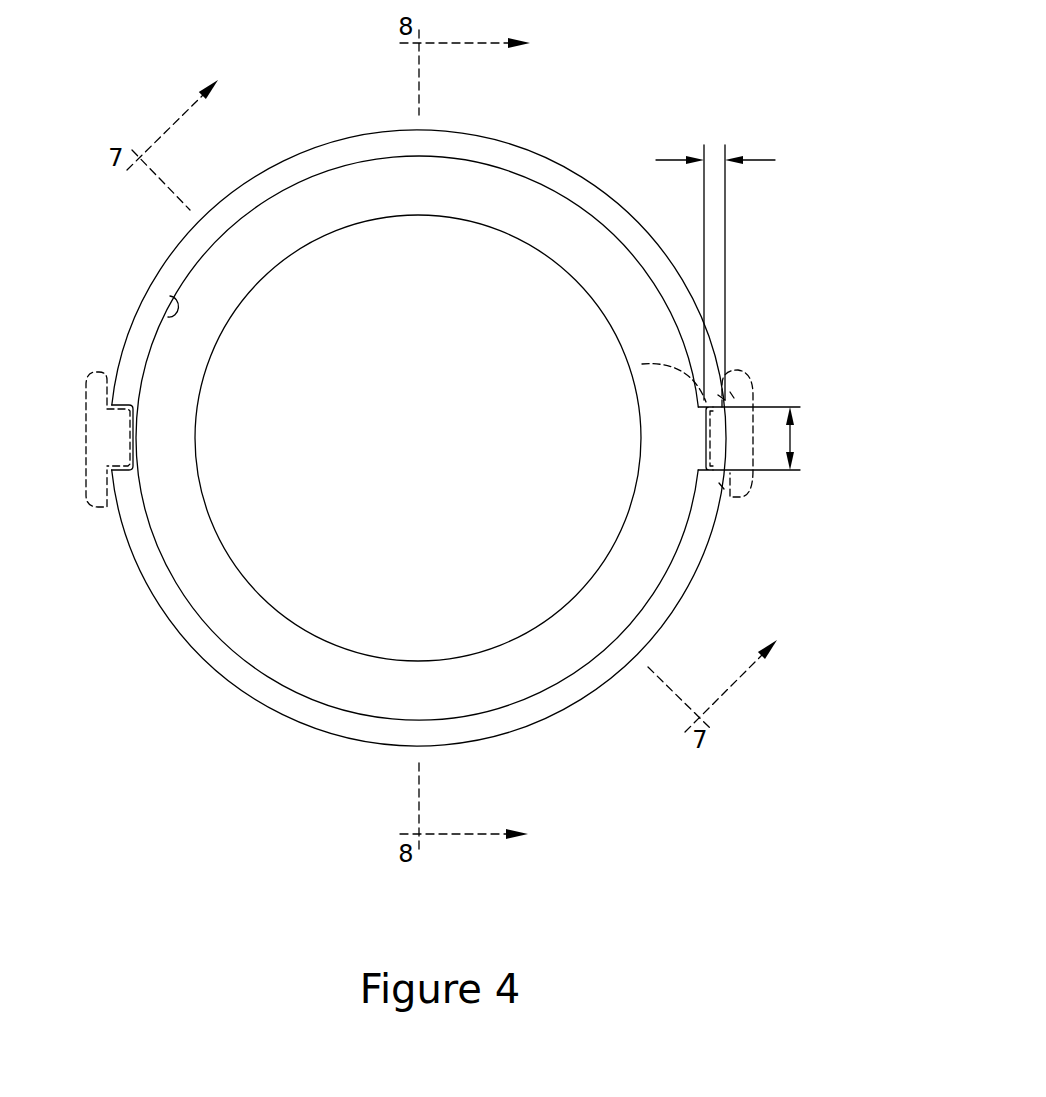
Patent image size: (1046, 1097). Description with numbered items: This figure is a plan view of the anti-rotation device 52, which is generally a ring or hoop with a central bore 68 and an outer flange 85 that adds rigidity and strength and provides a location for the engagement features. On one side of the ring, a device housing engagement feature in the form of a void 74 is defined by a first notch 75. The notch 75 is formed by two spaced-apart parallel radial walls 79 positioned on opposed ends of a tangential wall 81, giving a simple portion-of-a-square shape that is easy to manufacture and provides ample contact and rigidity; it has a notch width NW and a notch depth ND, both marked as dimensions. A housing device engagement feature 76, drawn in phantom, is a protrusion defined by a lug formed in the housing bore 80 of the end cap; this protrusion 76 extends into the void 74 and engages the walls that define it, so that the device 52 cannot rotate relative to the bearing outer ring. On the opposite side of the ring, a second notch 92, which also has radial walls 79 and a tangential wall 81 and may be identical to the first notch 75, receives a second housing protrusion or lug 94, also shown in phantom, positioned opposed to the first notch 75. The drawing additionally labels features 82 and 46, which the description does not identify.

The anti-rotation device 52 is at (603, 68).
The outer surface 82 is at (138, 308).
The outer flange 85 is at (205, 641).
The bore 68 is at (178, 300).
The second housing protrusion or lug 94 is at (134, 434).
The second notch 92 is at (115, 534).
The radial walls 79 is at (705, 423).
The tangential wall 81 is at (704, 437).
The housing device engagement feature 76 is at (642, 364).
The phantom component 46 is at (753, 503).
The housing bore 80 is at (725, 398).
The notch 75 is at (742, 381).
The void 74 is at (726, 503).
The notch depth ND is at (763, 160).
The notch width NW is at (795, 440).